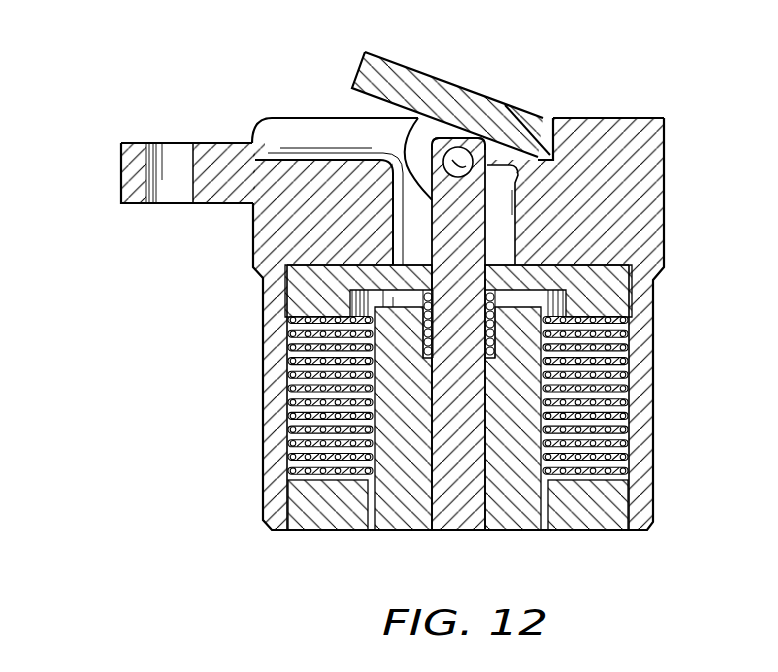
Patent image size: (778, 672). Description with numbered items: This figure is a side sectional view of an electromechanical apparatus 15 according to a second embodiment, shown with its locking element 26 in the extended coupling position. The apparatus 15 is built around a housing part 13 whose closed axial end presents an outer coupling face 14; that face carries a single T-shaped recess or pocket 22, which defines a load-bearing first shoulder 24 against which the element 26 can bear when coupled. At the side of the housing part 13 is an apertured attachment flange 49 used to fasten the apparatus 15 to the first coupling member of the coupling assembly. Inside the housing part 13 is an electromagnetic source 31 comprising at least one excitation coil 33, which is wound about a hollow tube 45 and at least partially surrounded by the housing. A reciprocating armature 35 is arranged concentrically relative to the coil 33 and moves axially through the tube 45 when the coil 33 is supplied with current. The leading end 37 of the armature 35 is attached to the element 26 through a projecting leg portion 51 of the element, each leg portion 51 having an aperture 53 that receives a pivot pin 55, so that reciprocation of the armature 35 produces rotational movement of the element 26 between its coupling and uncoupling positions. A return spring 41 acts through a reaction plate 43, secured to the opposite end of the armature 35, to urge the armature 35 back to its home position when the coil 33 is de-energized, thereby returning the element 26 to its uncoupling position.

The housing part 13 is at (665, 193).
The outer coupling face 14 is at (627, 118).
The electromechanical apparatus 15 is at (575, 116).
The recess or pocket 22 is at (330, 157).
The load-bearing first shoulder 24 is at (540, 116).
The locking element 26 is at (452, 80).
The electromagnetic source 31 is at (632, 403).
The excitation coil 33 is at (628, 458).
The reciprocating armature 35 is at (457, 535).
The leading end 37 is at (460, 137).
The return spring 41 is at (498, 322).
The reaction plate 43 is at (510, 532).
The hollow tube 45 is at (315, 296).
The apertured attachment flange 49 is at (121, 176).
The projecting leg portion 51 is at (417, 178).
The aperture 53 is at (444, 156).
The pivot pin 55 is at (490, 177).